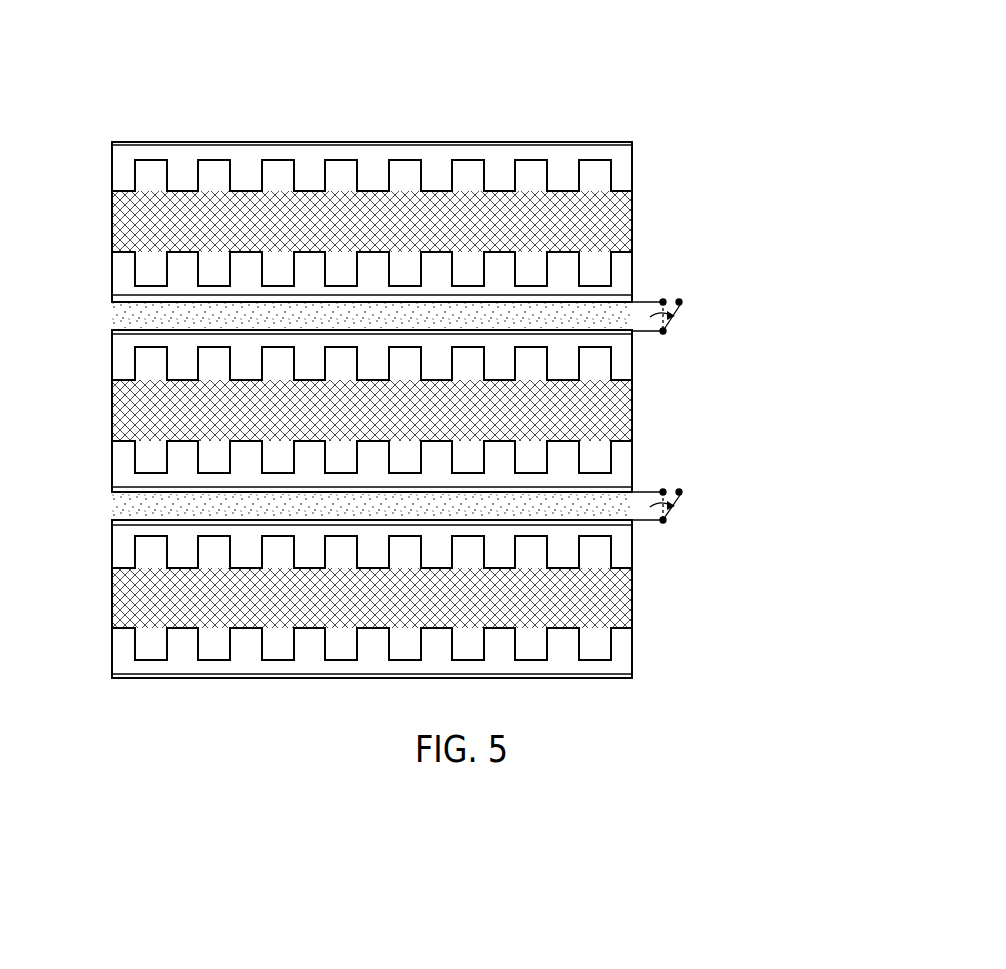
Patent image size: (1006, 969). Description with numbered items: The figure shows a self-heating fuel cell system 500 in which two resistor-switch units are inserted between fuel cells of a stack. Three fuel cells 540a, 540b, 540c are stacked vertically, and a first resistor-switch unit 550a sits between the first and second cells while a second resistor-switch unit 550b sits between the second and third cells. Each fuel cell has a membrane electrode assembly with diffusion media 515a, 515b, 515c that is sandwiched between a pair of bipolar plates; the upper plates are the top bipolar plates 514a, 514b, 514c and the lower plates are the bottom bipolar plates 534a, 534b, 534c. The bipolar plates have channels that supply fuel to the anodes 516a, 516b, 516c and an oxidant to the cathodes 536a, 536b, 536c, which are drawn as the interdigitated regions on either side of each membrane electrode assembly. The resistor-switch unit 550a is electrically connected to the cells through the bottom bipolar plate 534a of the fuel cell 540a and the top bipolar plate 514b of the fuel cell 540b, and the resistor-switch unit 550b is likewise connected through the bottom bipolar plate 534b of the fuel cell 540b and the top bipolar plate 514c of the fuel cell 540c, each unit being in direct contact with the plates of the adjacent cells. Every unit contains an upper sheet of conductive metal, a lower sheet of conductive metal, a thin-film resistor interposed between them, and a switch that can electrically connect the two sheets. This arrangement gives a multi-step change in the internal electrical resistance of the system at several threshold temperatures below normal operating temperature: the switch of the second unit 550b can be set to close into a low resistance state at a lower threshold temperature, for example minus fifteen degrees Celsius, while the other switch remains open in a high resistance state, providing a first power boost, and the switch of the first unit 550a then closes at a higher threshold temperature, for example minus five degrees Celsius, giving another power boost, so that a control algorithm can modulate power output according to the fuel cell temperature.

The stacked capacitor device 500 is at (372, 103).
The fuel cell 540a is at (700, 223).
The fuel cell 540b is at (700, 410).
The fuel cell 540c is at (700, 604).
The first electrode of cell #1 514a is at (630, 163).
The top bipolar plate 514b is at (630, 365).
The top bipolar plate 514c is at (630, 554).
The membrane electrode assembly with diffusion media 515a is at (628, 210).
The membrane electrode assembly with diffusion media 515b is at (628, 412).
The membrane electrode assembly with diffusion media 515c is at (628, 600).
The bottom bipolar plate 534a is at (628, 273).
The bottom bipolar plate 534b is at (628, 475).
The second electrode of cell #3 534c is at (628, 665).
The anode 516a is at (143, 183).
The anode 516b is at (143, 371).
The anode 516c is at (140, 556).
The cathode 536a is at (143, 273).
The cathode 536b is at (143, 461).
The cathode 536c is at (140, 646).
The resistor-switch unit 550a is at (732, 299).
The resistor-switch unit 550b is at (732, 490).